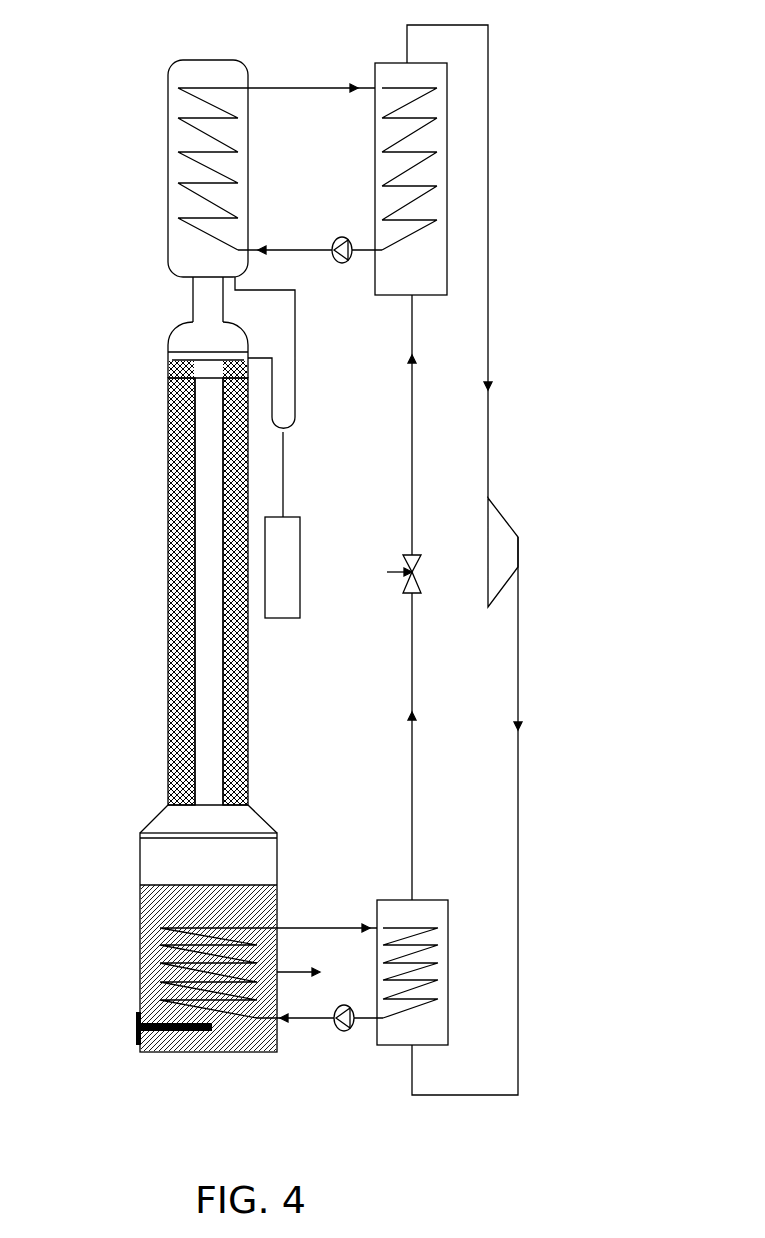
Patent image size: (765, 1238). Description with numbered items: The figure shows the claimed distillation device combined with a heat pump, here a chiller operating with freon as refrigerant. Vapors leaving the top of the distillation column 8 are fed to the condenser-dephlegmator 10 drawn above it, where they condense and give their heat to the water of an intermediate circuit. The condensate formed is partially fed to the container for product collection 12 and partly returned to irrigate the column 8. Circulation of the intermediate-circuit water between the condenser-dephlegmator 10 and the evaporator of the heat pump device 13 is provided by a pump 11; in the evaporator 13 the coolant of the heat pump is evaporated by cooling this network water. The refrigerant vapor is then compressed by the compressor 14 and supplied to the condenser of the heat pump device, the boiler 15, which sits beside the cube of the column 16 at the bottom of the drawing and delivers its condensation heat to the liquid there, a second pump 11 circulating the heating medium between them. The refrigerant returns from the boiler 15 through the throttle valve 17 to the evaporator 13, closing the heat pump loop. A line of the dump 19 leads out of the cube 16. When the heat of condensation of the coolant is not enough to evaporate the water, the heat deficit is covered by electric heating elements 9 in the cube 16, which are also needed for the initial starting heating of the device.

The distillation column 8 is at (170, 550).
The electric heating elements 9 is at (135, 1033).
The condenser-dephlegmator 10 is at (168, 160).
The pump 11 is at (333, 265).
The container for product collection 12 is at (300, 567).
The evaporator of the heat pump device 13 is at (374, 180).
The compressor 14 is at (487, 578).
The condenser of the heat pump device (boiler) 15 is at (448, 975).
The cube of the column 16 is at (138, 908).
The throttle valve 17 is at (415, 553).
The line of the dump 19 is at (309, 956).